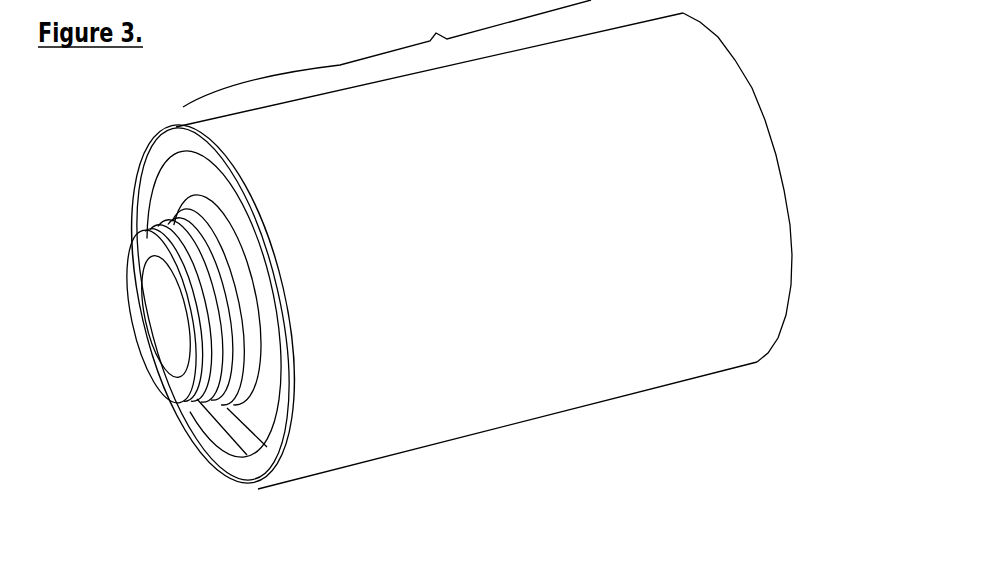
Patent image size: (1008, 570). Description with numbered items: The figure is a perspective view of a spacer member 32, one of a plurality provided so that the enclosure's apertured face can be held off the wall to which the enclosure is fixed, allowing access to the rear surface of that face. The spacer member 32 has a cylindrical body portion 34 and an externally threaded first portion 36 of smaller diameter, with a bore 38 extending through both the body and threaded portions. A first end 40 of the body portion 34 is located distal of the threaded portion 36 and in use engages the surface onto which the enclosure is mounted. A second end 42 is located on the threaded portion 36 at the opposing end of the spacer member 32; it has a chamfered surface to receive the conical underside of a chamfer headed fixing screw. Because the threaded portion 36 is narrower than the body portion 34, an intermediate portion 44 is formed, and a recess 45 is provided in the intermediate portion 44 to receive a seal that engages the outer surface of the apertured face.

The spacer member 32 is at (674, 444).
The cylindrical body portion 34 is at (436, 33).
The externally threaded first portion 36 is at (110, 185).
The bore 38 is at (173, 355).
The first end 40 is at (811, 257).
The second end 42 is at (147, 315).
The intermediate portion 44 is at (236, 461).
The recess 45 is at (184, 204).